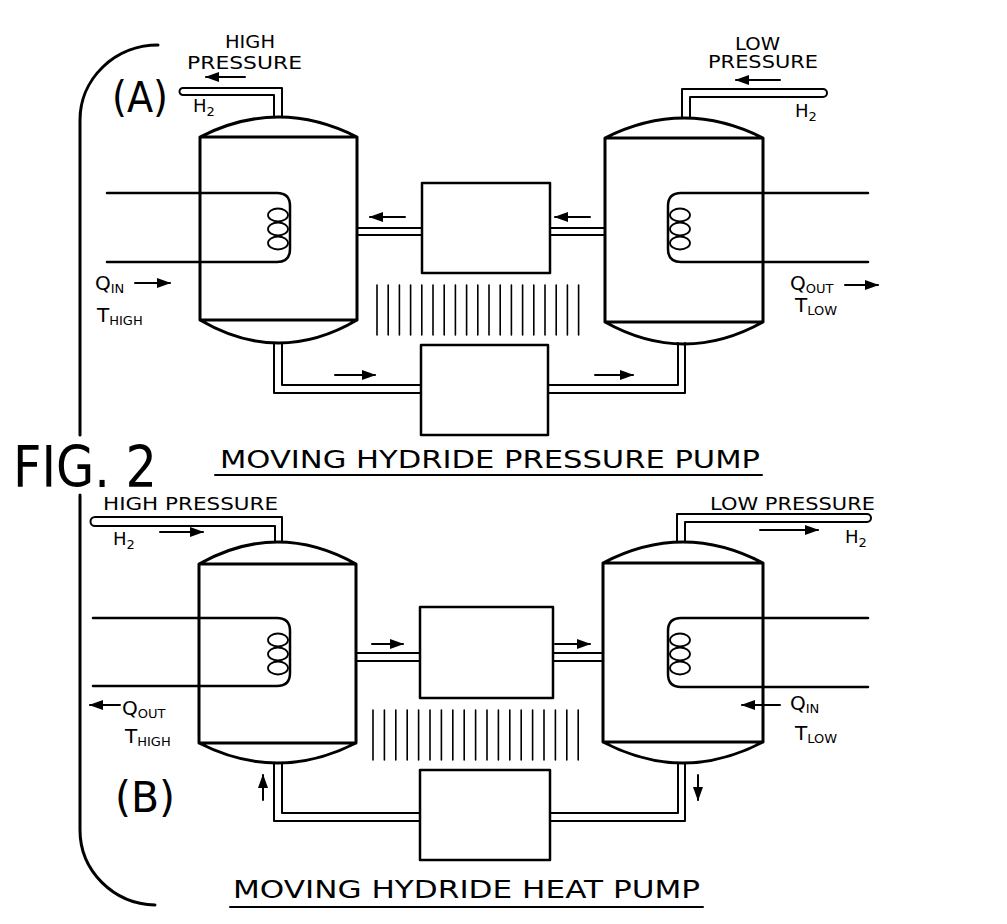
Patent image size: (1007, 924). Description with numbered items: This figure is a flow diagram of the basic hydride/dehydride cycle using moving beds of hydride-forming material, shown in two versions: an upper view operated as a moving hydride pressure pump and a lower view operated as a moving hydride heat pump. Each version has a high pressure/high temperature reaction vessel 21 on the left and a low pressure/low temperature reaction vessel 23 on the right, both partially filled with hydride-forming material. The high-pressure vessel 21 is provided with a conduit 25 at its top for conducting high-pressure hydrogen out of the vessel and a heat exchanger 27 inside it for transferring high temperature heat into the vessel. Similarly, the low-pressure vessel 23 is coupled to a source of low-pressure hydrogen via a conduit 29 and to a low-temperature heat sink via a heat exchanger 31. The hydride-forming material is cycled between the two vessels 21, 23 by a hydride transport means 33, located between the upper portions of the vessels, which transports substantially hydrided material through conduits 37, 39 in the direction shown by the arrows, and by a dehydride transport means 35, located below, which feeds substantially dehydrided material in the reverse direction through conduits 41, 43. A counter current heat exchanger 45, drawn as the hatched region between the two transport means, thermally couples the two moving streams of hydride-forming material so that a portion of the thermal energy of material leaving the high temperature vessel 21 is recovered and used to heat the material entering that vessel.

The high pressure/high temperature reaction vessel 21 is at (330, 157).
The low pressure/low temperature reaction vessel 23 is at (605, 150).
The conduit 25 is at (283, 100).
The heat exchanger 27 is at (255, 264).
The conduit 29 is at (682, 100).
The heat exchanger 31 is at (706, 264).
The hydride transport means 33 is at (483, 183).
The dehydride transport means 35 is at (549, 412).
The conduit 37 is at (575, 237).
The conduit 39 is at (387, 237).
The conduit 41 is at (338, 396).
The conduit 43 is at (613, 397).
The counter current heat exchanger 45 is at (392, 323).